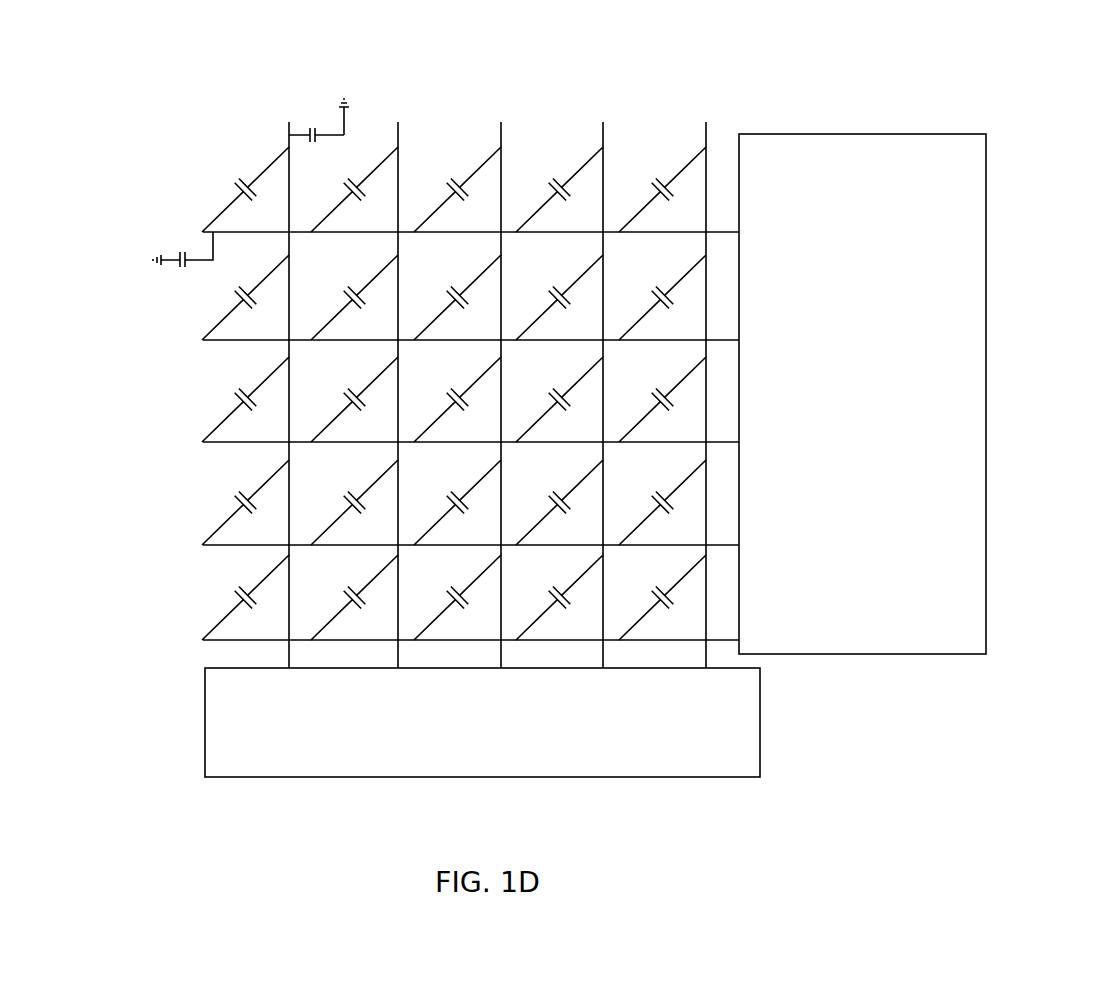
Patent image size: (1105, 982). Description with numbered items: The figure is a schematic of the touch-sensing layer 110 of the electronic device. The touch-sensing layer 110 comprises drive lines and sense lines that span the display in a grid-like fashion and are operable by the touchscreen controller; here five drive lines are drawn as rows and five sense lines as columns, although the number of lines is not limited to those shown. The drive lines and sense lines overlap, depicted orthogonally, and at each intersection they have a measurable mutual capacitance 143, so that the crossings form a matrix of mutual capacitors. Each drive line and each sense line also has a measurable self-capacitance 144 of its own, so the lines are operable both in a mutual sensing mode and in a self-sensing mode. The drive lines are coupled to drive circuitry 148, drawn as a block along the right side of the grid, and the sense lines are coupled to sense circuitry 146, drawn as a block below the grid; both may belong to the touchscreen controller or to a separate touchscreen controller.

The touch-sensing layer 110 is at (66, 131).
The mutual capacitance 143 is at (233, 187).
The self-capacitance 144 is at (313, 142).
The sense circuitry 146 is at (203, 737).
The drive circuitry 148 is at (987, 292).